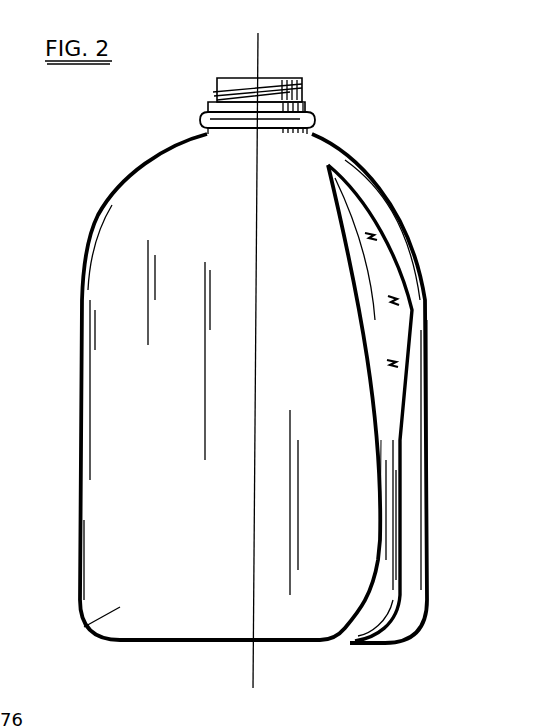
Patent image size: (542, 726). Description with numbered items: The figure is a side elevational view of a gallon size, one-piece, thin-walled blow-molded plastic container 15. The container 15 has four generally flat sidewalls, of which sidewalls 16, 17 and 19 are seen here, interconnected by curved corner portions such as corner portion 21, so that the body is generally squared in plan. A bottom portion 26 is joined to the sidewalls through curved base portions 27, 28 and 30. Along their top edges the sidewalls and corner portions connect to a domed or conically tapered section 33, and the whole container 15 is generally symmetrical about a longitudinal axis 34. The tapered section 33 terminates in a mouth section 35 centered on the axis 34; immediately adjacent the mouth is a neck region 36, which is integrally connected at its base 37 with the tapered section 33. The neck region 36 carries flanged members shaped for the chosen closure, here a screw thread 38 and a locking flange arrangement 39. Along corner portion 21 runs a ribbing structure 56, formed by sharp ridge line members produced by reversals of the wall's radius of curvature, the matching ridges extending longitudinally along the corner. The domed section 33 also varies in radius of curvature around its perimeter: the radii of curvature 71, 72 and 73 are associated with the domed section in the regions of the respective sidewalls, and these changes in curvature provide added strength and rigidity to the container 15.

The container 15 is at (388, 173).
The flat sidewall 16 is at (246, 367).
The flat sidewall 17 is at (428, 378).
The flat sidewall 19 is at (82, 375).
The curved corner portion 21 is at (377, 513).
The bottom portion 26 is at (207, 645).
The curved base portion 27 is at (95, 620).
The curved base portion 28 is at (427, 600).
The curved base portion 30 is at (80, 600).
The conically tapered section 33 is at (147, 157).
The longitudinal axis 34 is at (270, 50).
The mouth section 35 is at (240, 78).
The neck region 36 is at (307, 100).
The base of neck region 37 is at (208, 128).
The screw thread 38 is at (305, 90).
The locking flange arrangement 39 is at (308, 107).
The ribbing structure 56 is at (377, 285).
The radius of curvature of domed section 71 is at (110, 197).
The radius of curvature of domed section 72 is at (245, 208).
The radius of curvature of domed section 73 is at (340, 143).